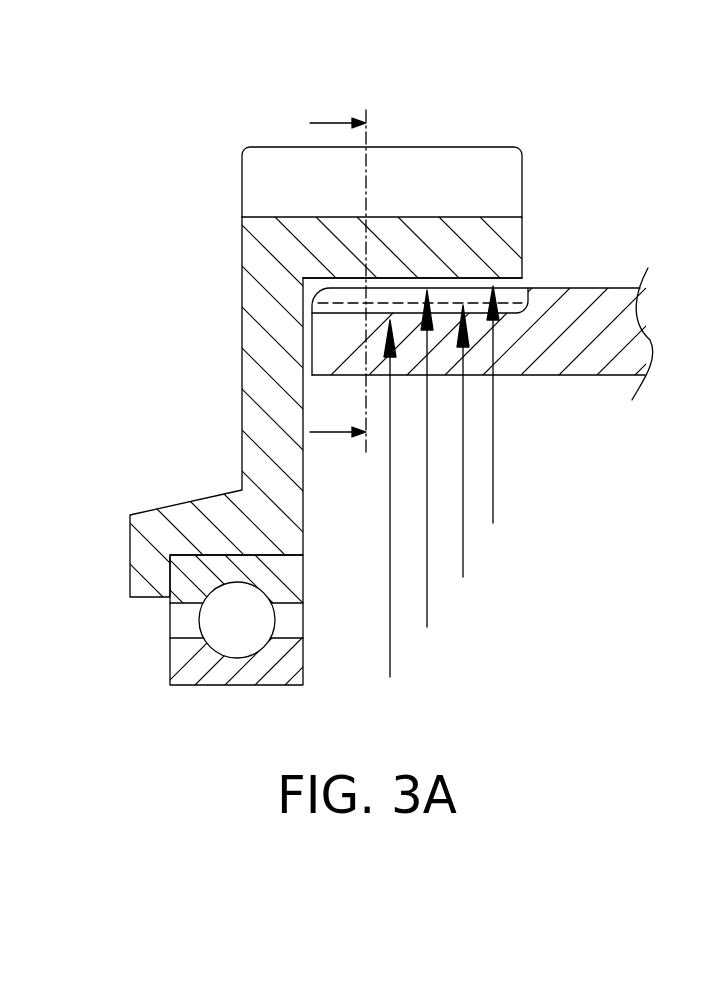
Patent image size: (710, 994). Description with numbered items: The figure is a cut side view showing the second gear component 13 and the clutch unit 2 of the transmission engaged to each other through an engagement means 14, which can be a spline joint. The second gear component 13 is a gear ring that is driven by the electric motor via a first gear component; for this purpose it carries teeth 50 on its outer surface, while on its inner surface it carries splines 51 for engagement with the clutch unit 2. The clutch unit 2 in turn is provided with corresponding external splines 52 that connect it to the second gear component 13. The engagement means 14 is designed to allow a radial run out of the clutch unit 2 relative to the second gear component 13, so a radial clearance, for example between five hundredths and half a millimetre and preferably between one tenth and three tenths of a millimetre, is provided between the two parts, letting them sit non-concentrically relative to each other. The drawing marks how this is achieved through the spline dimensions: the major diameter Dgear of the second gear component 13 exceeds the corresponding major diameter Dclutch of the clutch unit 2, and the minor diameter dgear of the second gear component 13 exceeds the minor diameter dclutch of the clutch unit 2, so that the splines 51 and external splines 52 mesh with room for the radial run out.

The clutch unit 2 is at (573, 300).
The second gear component 13 is at (277, 309).
The engagement means 14 is at (548, 252).
The teeth 50 is at (262, 192).
The splines 51 is at (403, 278).
The external splines 52 is at (456, 298).
The minor diameter of the clutch unit dclutch is at (391, 645).
The major diameter of the clutch unit Dclutch is at (427, 593).
The minor diameter of the second gear component dgear is at (463, 542).
The major diameter of the second gear component Dgear is at (493, 490).